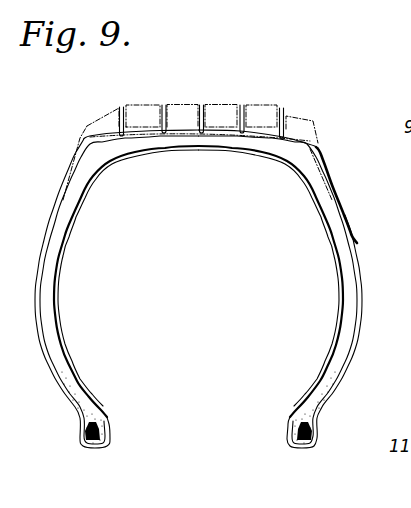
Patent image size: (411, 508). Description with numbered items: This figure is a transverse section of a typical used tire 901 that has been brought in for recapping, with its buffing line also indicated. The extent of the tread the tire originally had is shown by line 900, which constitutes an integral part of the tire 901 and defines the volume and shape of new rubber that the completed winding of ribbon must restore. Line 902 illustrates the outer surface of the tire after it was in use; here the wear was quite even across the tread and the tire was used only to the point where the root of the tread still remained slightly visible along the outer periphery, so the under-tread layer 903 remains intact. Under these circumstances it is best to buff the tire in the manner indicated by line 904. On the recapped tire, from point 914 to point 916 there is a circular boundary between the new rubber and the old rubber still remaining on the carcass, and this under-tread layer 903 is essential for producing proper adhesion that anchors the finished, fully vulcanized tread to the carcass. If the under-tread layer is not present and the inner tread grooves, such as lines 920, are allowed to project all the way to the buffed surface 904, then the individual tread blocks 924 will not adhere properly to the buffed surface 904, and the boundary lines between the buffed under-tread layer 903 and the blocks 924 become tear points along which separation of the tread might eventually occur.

The line 900 is at (257, 108).
The tire 901 is at (206, 262).
The line 902 is at (90, 133).
The under-tread layer 903 is at (262, 140).
The line 904 is at (305, 153).
The point 914 is at (45, 240).
The point 916 is at (357, 243).
The inner tread grooves 920 is at (121, 107).
The tread blocks 924 is at (102, 121).